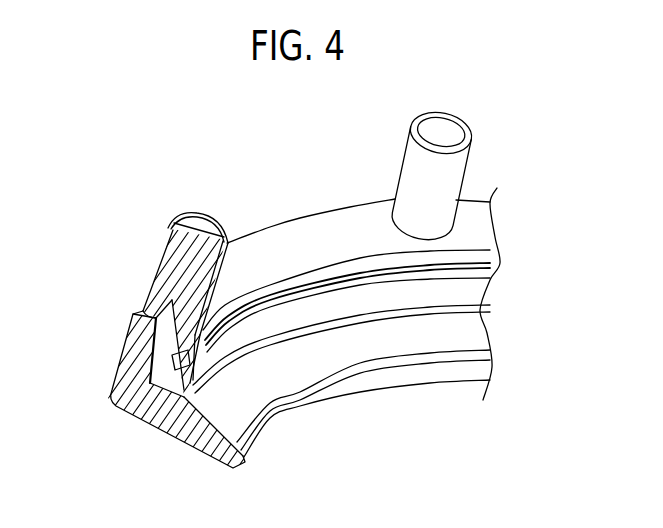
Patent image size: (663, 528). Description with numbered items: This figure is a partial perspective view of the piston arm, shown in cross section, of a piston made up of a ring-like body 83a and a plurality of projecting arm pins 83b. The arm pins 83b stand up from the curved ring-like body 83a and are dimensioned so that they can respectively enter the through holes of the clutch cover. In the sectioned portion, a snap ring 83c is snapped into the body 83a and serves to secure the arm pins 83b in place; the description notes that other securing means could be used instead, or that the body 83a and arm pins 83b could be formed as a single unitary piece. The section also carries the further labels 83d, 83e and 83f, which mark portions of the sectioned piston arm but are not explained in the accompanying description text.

The ring-like body 83a is at (312, 212).
The projecting arm pin 83b is at (467, 160).
The snap ring 83c is at (198, 400).
The side wall 83d is at (118, 353).
The groove 83e is at (152, 384).
The notch 83f is at (150, 296).